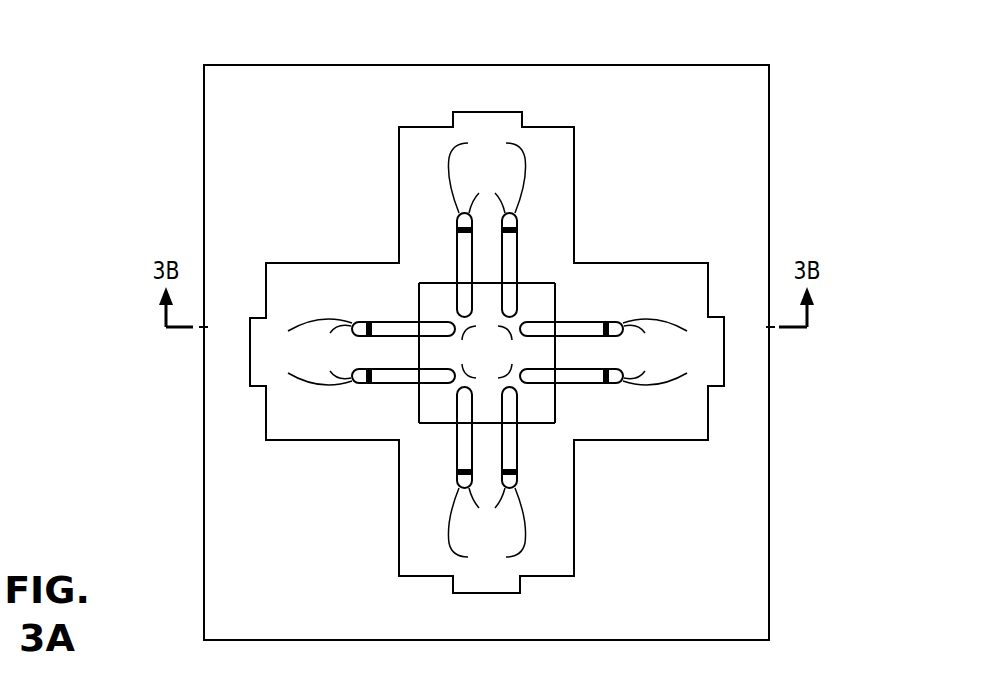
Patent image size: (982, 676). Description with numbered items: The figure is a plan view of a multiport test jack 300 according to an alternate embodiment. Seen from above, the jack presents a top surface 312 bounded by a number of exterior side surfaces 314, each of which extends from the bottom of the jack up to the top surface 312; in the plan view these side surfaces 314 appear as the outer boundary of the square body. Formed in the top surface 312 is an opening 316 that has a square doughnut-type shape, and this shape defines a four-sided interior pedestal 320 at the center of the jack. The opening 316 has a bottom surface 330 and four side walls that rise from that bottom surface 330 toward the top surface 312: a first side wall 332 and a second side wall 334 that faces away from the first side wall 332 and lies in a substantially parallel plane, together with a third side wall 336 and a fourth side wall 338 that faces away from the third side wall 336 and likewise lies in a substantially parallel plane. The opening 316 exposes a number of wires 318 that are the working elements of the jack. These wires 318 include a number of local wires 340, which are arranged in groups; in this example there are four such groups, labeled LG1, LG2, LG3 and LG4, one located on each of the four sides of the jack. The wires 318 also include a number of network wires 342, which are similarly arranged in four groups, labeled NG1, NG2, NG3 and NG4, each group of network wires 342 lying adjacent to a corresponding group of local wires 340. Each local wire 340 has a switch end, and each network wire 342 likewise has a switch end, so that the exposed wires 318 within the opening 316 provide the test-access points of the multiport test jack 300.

The multiport test jack 300 is at (744, 32).
The top surface 312 is at (218, 522).
The exterior side surfaces 314 is at (338, 65).
The opening 316 is at (617, 264).
The wires 318 is at (487, 352).
The four-sided interior pedestal 320 is at (558, 413).
The bottom surface of opening 330 is at (555, 184).
The first side wall 332 is at (417, 302).
The second side wall 334 is at (556, 307).
The third side wall 336 is at (445, 282).
The fourth side wall 338 is at (538, 424).
The local wires 340 is at (488, 351).
The network wires 342 is at (513, 243).
The network wire group NG1 is at (383, 322).
The network wire group NG2 is at (513, 268).
The network wire group NG3 is at (583, 325).
The network wire group NG4 is at (457, 447).
The local wire group LG1 is at (329, 351).
The local wire group LG2 is at (488, 190).
The local wire group LG3 is at (643, 351).
The local wire group LG4 is at (485, 515).